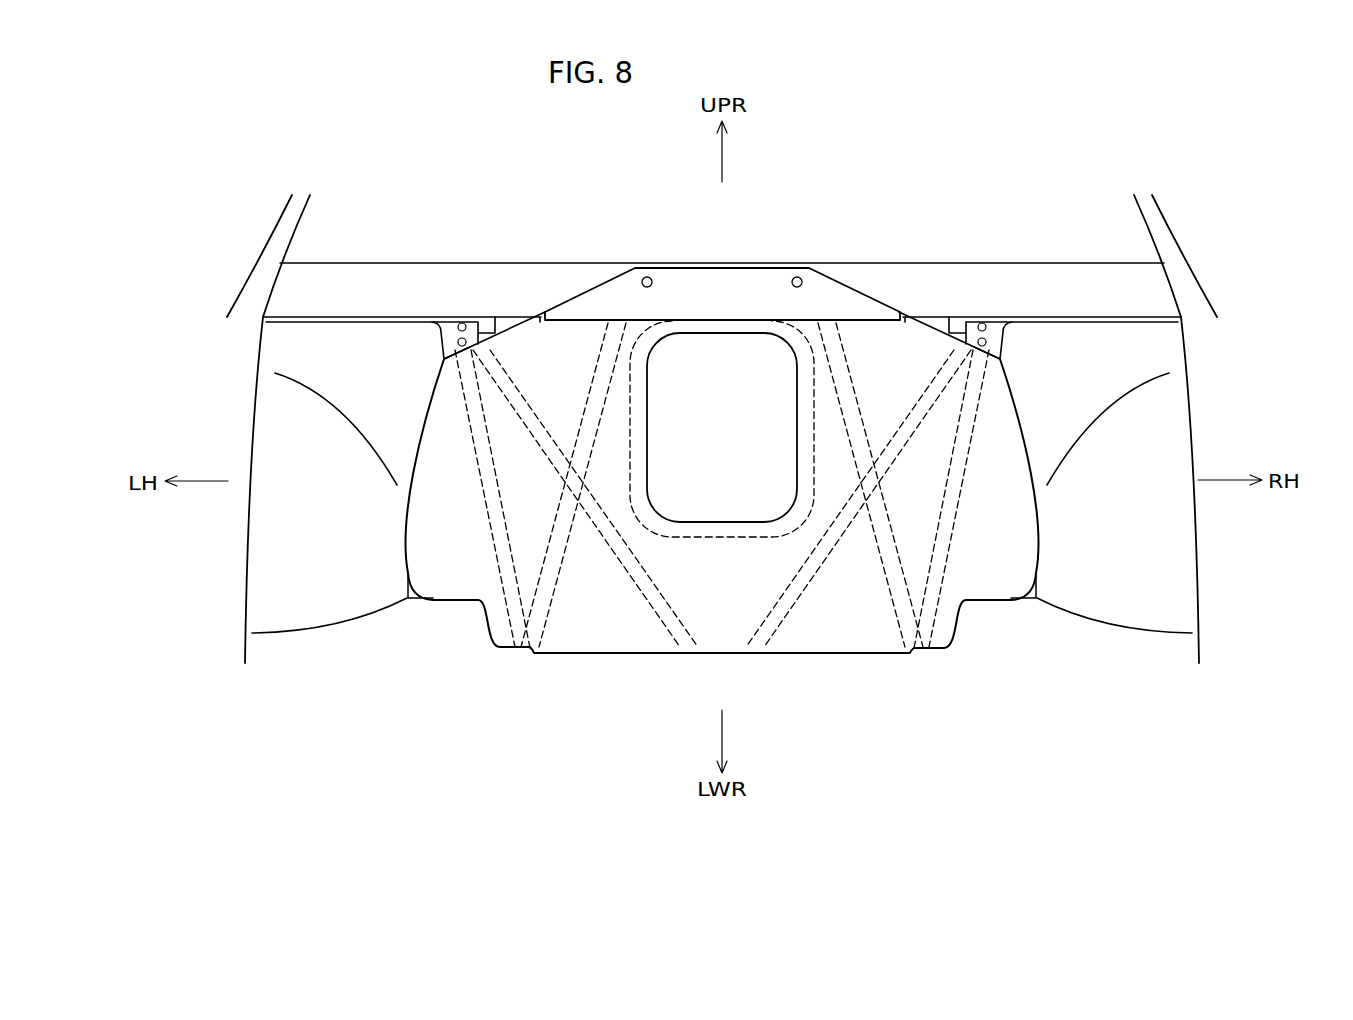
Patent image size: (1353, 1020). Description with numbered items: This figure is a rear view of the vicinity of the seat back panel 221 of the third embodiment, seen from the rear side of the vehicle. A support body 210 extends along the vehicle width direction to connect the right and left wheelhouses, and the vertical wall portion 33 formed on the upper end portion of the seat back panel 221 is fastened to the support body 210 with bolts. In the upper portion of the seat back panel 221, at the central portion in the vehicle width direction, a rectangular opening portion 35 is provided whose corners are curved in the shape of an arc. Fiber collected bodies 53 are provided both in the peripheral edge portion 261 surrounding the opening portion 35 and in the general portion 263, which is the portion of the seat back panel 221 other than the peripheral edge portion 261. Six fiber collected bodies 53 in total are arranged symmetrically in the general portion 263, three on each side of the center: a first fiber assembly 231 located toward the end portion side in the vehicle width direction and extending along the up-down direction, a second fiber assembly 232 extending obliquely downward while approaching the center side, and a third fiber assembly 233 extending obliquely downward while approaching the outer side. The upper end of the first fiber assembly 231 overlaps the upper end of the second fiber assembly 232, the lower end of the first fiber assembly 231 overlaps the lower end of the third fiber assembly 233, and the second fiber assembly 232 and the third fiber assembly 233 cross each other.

The support body 210 is at (389, 275).
The vertical wall portion 33 is at (838, 295).
The opening portion 35 is at (747, 358).
The seat back panel 221 is at (869, 668).
The fiber collected bodies 53 is at (722, 468).
The peripheral edge portion 261 is at (683, 328).
The first fiber assembly 231 is at (497, 567).
The second fiber assembly 232 is at (655, 607).
The third fiber assembly 233 is at (535, 577).
The general portion 263 is at (907, 358).